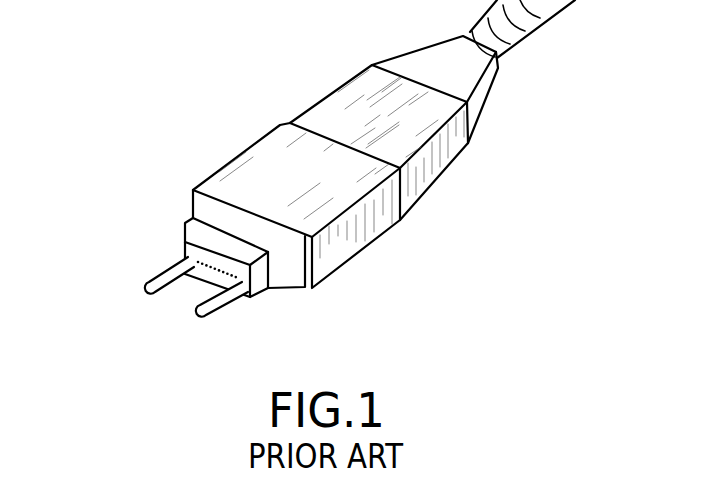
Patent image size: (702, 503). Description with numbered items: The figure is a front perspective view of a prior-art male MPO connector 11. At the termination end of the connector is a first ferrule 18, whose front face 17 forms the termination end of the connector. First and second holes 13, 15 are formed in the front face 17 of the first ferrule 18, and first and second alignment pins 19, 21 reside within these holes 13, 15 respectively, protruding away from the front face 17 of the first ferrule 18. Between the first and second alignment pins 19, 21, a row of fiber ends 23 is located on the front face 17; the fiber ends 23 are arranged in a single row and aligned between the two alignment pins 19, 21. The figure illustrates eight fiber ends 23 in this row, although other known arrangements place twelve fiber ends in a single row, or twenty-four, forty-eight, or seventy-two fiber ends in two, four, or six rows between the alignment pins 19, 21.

The male MPO connector 11 is at (247, 96).
The first hole 13 is at (183, 241).
The second hole 15 is at (247, 280).
The front face 17 is at (213, 262).
The first ferrule 18 is at (260, 277).
The first alignment pin 19 is at (163, 280).
The second alignment pin 21 is at (214, 300).
The fiber ends 23 is at (200, 271).